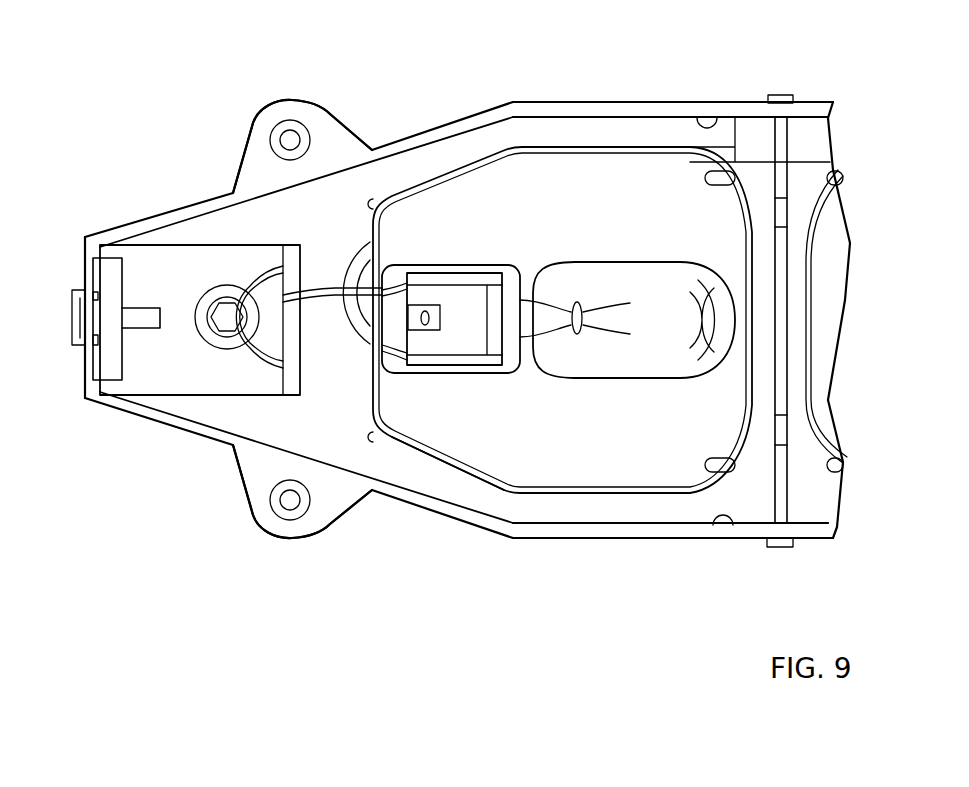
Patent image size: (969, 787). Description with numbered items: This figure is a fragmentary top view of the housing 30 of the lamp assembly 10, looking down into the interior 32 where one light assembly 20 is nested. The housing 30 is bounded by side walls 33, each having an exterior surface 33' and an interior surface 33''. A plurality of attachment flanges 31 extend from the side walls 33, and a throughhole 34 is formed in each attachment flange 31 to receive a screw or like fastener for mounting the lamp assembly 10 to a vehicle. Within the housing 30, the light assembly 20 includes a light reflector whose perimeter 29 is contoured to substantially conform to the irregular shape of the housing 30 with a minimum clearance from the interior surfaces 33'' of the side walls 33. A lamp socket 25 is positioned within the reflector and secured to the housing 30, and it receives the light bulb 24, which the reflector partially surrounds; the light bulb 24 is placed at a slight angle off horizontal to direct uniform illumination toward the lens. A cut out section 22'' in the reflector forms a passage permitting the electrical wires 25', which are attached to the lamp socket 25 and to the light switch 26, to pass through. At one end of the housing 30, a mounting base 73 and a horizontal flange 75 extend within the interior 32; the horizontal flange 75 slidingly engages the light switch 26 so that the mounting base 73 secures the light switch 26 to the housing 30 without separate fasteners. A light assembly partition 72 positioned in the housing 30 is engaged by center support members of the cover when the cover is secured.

The lamp assembly 10 is at (204, 85).
The light assembly 20 is at (472, 183).
The cut out section 22'' is at (447, 350).
The light bulb 24 is at (610, 362).
The lamp socket 25 is at (459, 345).
The electrical wires 25' is at (332, 308).
The light switch 26 is at (210, 297).
The perimeter 29 is at (460, 477).
The housing 30 is at (598, 535).
The attachment flange 31 is at (322, 128).
The interior 32 is at (317, 224).
The side walls 33 is at (664, 573).
The exterior surface 33' is at (673, 71).
The interior surfaces 33'' is at (760, 324).
The throughhole 34 is at (288, 128).
The light assembly partition 72 is at (783, 500).
The mounting base 73 is at (163, 353).
The horizontal flange 75 is at (185, 377).